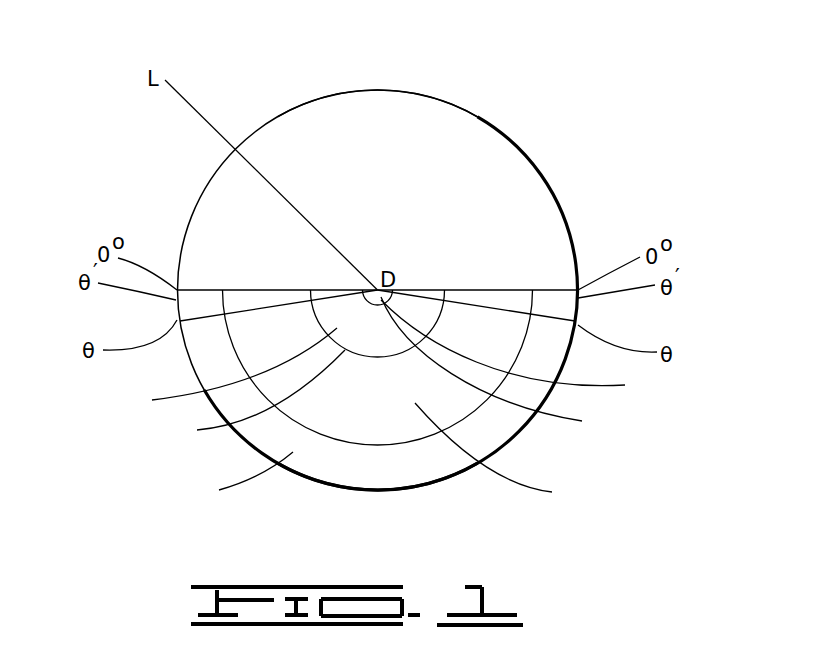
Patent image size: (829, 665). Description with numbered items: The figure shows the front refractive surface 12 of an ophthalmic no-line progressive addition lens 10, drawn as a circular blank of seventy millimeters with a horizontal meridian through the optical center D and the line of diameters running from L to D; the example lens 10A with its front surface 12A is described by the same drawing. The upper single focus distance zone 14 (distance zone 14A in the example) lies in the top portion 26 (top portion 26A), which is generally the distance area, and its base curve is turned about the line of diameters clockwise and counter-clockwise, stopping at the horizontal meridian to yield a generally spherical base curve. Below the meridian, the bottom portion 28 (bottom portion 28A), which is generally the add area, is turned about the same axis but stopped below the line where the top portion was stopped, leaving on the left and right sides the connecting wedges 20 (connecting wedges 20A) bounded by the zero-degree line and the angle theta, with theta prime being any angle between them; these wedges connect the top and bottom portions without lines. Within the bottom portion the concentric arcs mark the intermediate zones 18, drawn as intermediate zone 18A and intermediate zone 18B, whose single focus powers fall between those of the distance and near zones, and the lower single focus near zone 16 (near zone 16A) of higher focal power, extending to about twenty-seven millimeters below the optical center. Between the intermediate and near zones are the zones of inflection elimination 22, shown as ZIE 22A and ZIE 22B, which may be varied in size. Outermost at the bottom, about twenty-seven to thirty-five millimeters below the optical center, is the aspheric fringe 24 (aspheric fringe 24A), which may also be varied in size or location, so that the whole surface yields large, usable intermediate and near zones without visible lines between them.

The ophthalmic no-line progressive addition lens 10 is at (378, 251).
The lens 10A is at (343, 53).
The front refractive surface 12 is at (411, 303).
The front surface 12A is at (470, 207).
The distance zone 14 is at (383, 178).
The distance zone 14A is at (432, 143).
The near zone 16 is at (522, 455).
The near zone 16A is at (522, 455).
The intermediate zone 18 is at (385, 358).
The intermediate zone 18A is at (542, 350).
The intermediate zone 18B is at (202, 372).
The connecting wedges 20 is at (381, 367).
The connecting wedges 20A is at (193, 308).
The zone of inflection elimination (ZIE) 22 is at (384, 372).
The zone of inflection elimination (ZIE) 22A is at (520, 366).
The zone of inflection elimination (ZIE) 22B is at (226, 398).
The aspheric fringe 24 is at (215, 478).
The aspheric fringe 24A is at (215, 478).
The top portion 26 is at (403, 67).
The top portion 26A is at (391, 80).
The bottom portion 28 is at (408, 508).
The bottom portion 28A is at (395, 500).